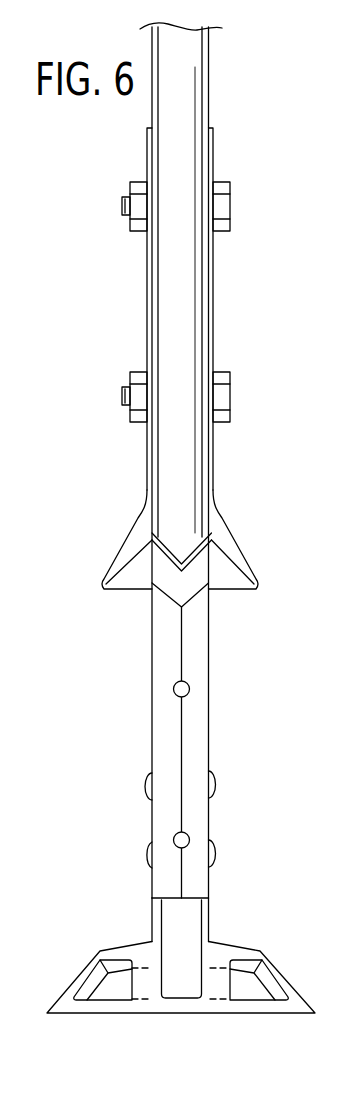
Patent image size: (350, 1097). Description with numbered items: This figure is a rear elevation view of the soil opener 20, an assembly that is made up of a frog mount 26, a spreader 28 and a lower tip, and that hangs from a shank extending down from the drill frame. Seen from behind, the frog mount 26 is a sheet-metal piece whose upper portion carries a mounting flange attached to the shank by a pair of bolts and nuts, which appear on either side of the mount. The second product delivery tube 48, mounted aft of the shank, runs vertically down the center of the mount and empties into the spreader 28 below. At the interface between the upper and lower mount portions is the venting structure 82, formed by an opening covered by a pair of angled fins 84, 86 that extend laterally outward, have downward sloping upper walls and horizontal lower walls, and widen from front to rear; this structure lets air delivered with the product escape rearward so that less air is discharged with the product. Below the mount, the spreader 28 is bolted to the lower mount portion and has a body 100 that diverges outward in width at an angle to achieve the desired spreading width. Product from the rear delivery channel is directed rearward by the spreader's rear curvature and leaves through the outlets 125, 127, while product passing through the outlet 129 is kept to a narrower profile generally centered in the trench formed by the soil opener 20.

The soil opener 20 is at (80, 232).
The frog mount 26 is at (232, 342).
The second product delivery tube 48 is at (192, 58).
The venting structure 82 is at (240, 518).
The angled fin 84 is at (232, 543).
The angled fin 86 is at (135, 535).
The body 100 is at (223, 953).
The outlet 129 is at (182, 988).
The spreader 28 is at (316, 992).
The outlet 125 is at (110, 988).
The outlet 127 is at (257, 988).